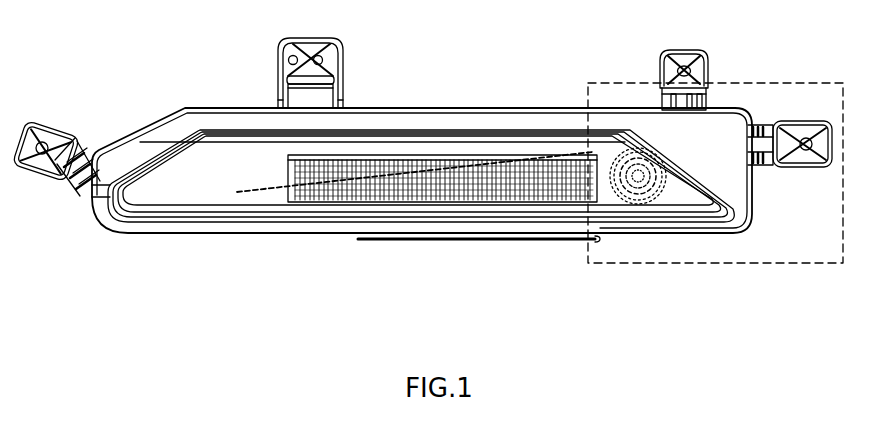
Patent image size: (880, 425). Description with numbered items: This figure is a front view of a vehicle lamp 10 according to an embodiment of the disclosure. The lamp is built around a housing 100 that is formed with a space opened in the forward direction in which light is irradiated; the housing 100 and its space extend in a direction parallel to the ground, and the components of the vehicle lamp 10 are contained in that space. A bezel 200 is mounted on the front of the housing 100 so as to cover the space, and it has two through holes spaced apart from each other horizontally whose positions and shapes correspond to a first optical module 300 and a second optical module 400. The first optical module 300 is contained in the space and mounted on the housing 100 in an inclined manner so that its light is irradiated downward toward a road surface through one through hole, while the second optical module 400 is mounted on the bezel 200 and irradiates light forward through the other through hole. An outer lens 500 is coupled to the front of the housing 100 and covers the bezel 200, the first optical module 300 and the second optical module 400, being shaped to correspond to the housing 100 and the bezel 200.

The vehicle lamp 10 is at (73, 37).
The housing 100 is at (387, 110).
The bezel 200 is at (208, 162).
The first optical module 300 is at (638, 196).
The second optical module 400 is at (511, 197).
The outer lens 500 is at (235, 190).